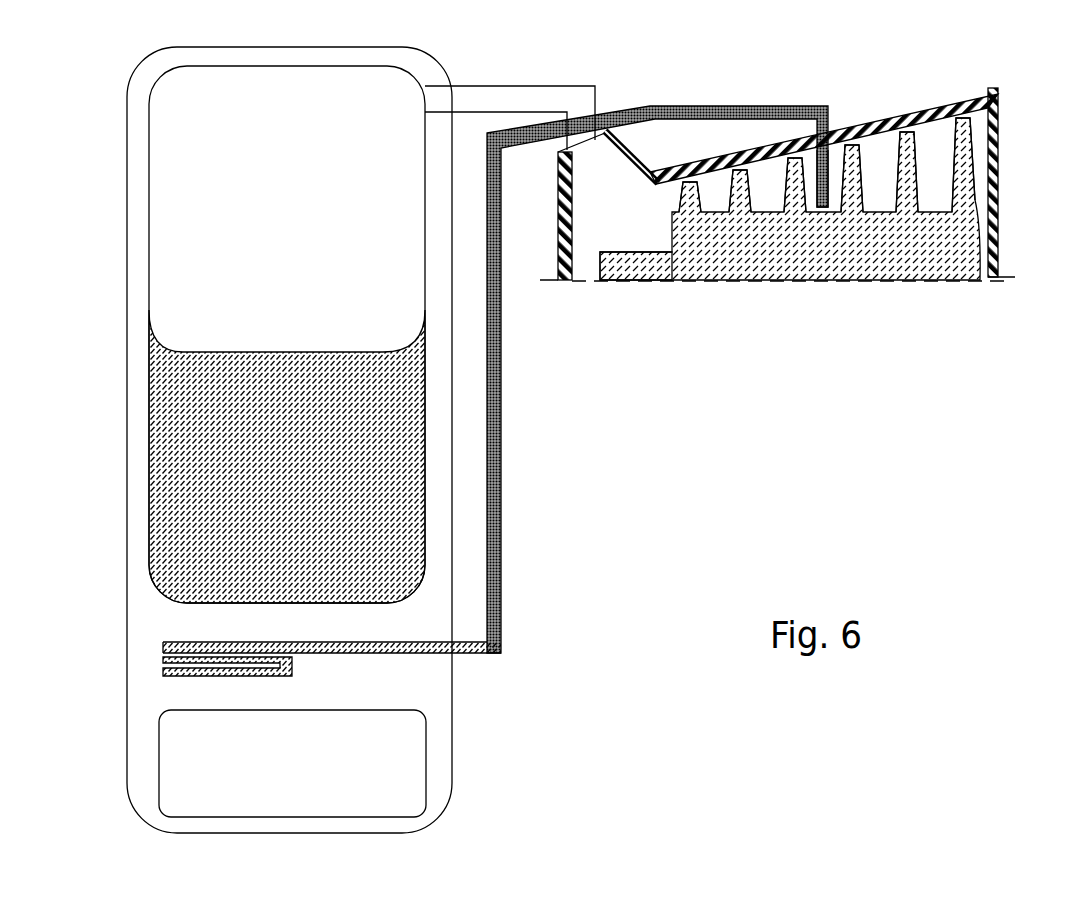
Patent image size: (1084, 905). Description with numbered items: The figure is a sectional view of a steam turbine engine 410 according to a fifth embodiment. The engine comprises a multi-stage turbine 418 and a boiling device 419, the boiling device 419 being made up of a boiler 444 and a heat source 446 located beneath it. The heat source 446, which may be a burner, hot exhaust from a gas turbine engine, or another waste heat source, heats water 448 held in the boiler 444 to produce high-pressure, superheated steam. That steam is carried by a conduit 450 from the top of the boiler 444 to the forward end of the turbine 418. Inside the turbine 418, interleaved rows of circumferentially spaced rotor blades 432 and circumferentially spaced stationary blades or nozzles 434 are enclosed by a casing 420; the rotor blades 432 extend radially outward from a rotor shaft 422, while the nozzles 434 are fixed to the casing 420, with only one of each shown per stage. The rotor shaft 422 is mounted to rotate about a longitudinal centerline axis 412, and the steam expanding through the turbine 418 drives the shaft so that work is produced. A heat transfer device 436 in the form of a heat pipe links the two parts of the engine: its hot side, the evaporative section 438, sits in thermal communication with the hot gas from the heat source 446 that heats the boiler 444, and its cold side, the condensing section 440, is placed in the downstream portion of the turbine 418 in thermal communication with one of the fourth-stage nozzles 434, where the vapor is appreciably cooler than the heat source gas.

The steam turbine engine 410 is at (823, 424).
The longitudinal centerline axis 412 is at (1005, 277).
The multi-stage turbine 418 is at (987, 75).
The boiling device 419 is at (127, 349).
The casing 420 is at (998, 160).
The rotor shaft 422 is at (673, 263).
The rotor blades 432 is at (685, 200).
The stationary blades or nozzles 434 is at (700, 128).
The heat transfer device 436 is at (501, 462).
The evaporative section 438 is at (185, 643).
The condensing section 440 is at (817, 208).
The boiler 444 is at (148, 200).
The heat source 446 is at (160, 760).
The water 448 is at (288, 352).
The conduit 450 is at (533, 86).